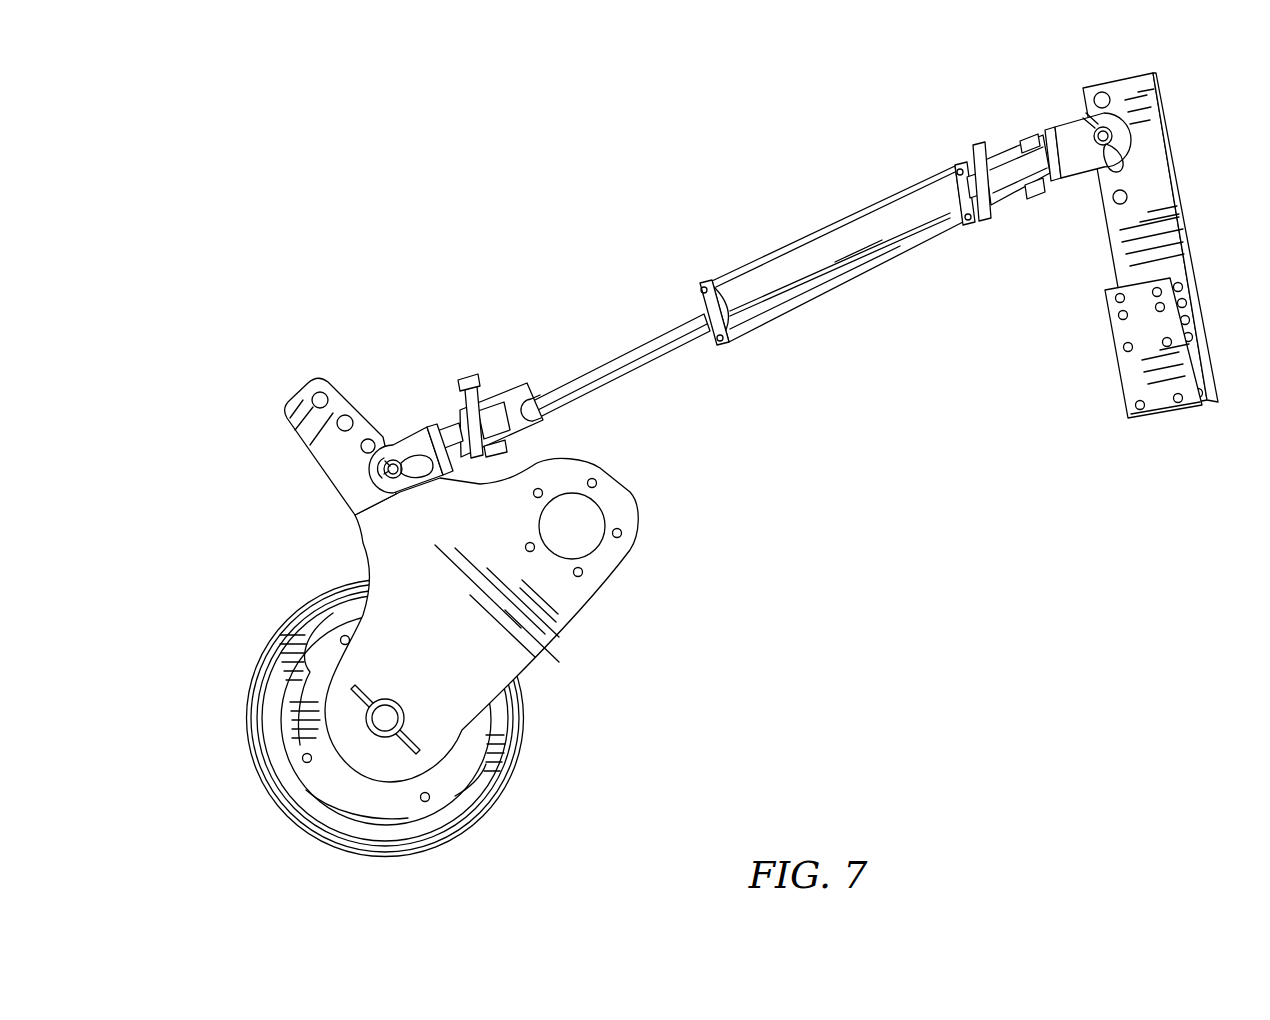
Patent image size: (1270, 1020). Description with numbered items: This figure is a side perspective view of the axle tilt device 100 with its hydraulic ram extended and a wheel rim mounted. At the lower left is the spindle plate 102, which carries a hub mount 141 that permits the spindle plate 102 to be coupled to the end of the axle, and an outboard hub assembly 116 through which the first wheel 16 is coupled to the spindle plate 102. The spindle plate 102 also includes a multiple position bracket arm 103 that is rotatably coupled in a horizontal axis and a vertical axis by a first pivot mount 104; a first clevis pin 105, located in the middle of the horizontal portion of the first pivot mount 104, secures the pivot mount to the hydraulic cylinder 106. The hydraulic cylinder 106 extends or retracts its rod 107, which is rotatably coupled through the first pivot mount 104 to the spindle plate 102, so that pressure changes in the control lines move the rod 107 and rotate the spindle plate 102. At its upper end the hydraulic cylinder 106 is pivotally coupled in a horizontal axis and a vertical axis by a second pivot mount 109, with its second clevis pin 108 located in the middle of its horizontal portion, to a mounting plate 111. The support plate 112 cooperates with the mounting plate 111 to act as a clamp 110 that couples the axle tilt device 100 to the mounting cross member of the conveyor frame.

The axle tilt device 100 is at (350, 205).
The first wheel 16 is at (243, 742).
The spindle plate 102 is at (515, 663).
The multiple position bracket arm 103 is at (342, 532).
The first pivot mount 104 is at (383, 423).
The first clevis pin 105 is at (532, 400).
The hydraulic cylinder 106 is at (823, 208).
The rod 107 is at (635, 350).
The second clevis pin 108 is at (1037, 200).
The second pivot mount 109 is at (930, 157).
The clamp 110 is at (1190, 450).
The mounting plate 111 is at (1157, 170).
The support plate 112 is at (1133, 385).
The outboard hub assembly 116 is at (429, 707).
The hub mount 141 is at (635, 447).